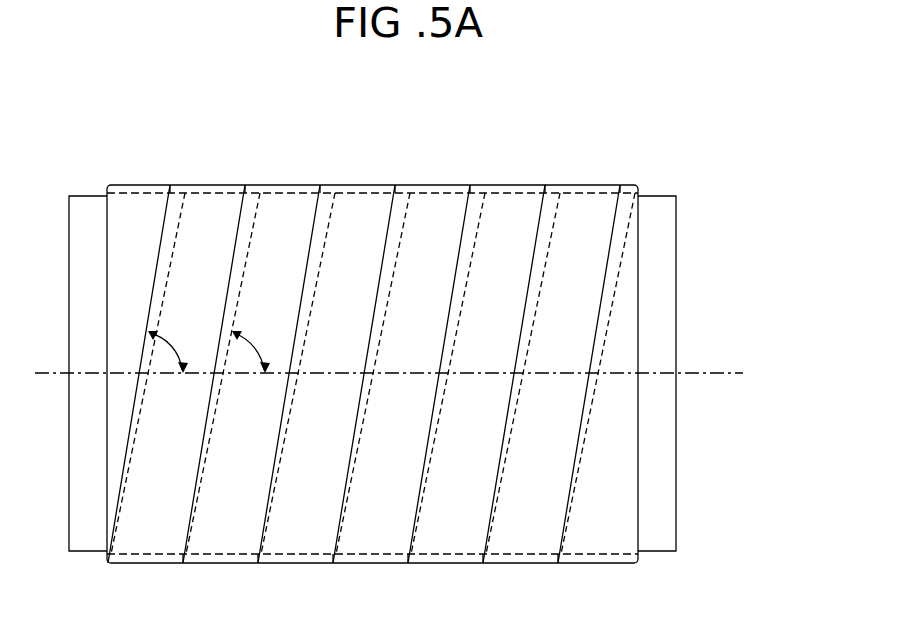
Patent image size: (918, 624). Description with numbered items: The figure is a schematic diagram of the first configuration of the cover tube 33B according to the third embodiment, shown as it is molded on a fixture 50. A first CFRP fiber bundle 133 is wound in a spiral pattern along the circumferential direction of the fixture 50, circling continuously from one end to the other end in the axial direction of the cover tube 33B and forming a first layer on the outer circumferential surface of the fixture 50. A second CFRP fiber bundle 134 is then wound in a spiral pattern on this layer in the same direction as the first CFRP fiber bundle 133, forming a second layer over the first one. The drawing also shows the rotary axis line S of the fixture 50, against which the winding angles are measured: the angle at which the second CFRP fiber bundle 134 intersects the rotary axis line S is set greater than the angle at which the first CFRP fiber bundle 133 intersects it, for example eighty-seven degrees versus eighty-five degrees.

The fixture 50 is at (676, 243).
The cover tube 33B is at (421, 150).
The second CFRP fiber bundle 134 is at (213, 185).
The first CFRP fiber bundle 133 is at (300, 185).
The rotary axis line S is at (707, 375).